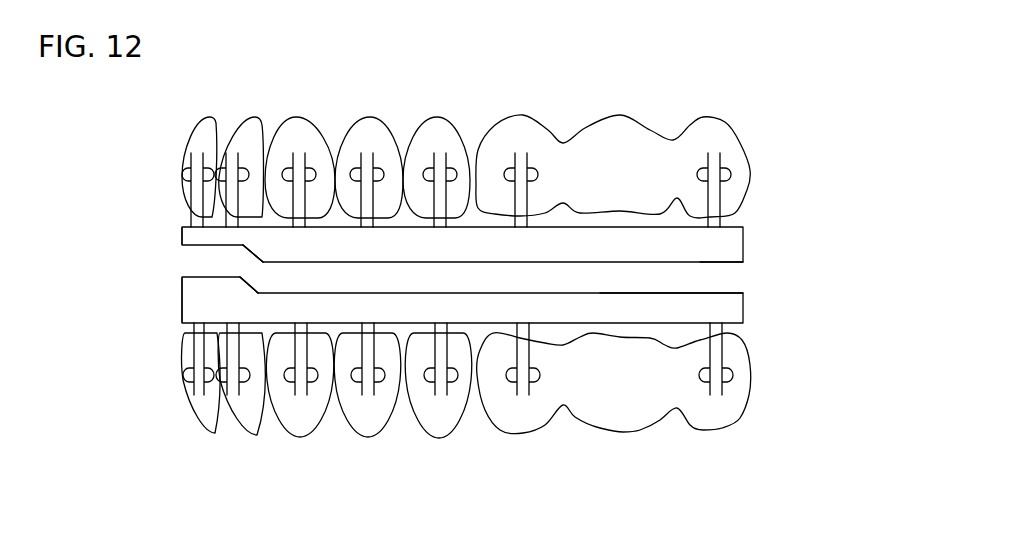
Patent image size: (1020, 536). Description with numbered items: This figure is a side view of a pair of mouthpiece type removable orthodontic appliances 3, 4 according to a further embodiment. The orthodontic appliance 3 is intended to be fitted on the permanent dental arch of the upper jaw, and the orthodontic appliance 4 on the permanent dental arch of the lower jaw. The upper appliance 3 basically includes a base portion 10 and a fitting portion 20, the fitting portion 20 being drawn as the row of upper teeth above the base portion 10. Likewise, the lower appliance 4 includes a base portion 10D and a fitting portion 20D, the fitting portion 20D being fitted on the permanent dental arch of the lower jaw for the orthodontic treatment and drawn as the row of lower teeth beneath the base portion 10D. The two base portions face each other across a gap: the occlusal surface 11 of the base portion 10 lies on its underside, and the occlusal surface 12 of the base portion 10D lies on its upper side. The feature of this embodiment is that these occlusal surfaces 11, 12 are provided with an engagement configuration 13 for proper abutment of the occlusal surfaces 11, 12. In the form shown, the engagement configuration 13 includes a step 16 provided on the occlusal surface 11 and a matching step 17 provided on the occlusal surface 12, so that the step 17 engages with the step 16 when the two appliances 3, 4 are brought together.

The fitting portion 20 is at (748, 116).
The fitting portion 20D is at (750, 430).
The orthodontic appliance 3 is at (775, 240).
The orthodontic appliance 4 is at (771, 314).
The base portion 10 is at (182, 240).
The base portion 10D is at (181, 305).
The occlusal surface 11 is at (717, 262).
The occlusal surface 12 is at (648, 291).
The engagement configuration 13 is at (251, 269).
The step 16 is at (250, 258).
The step 17 is at (259, 292).